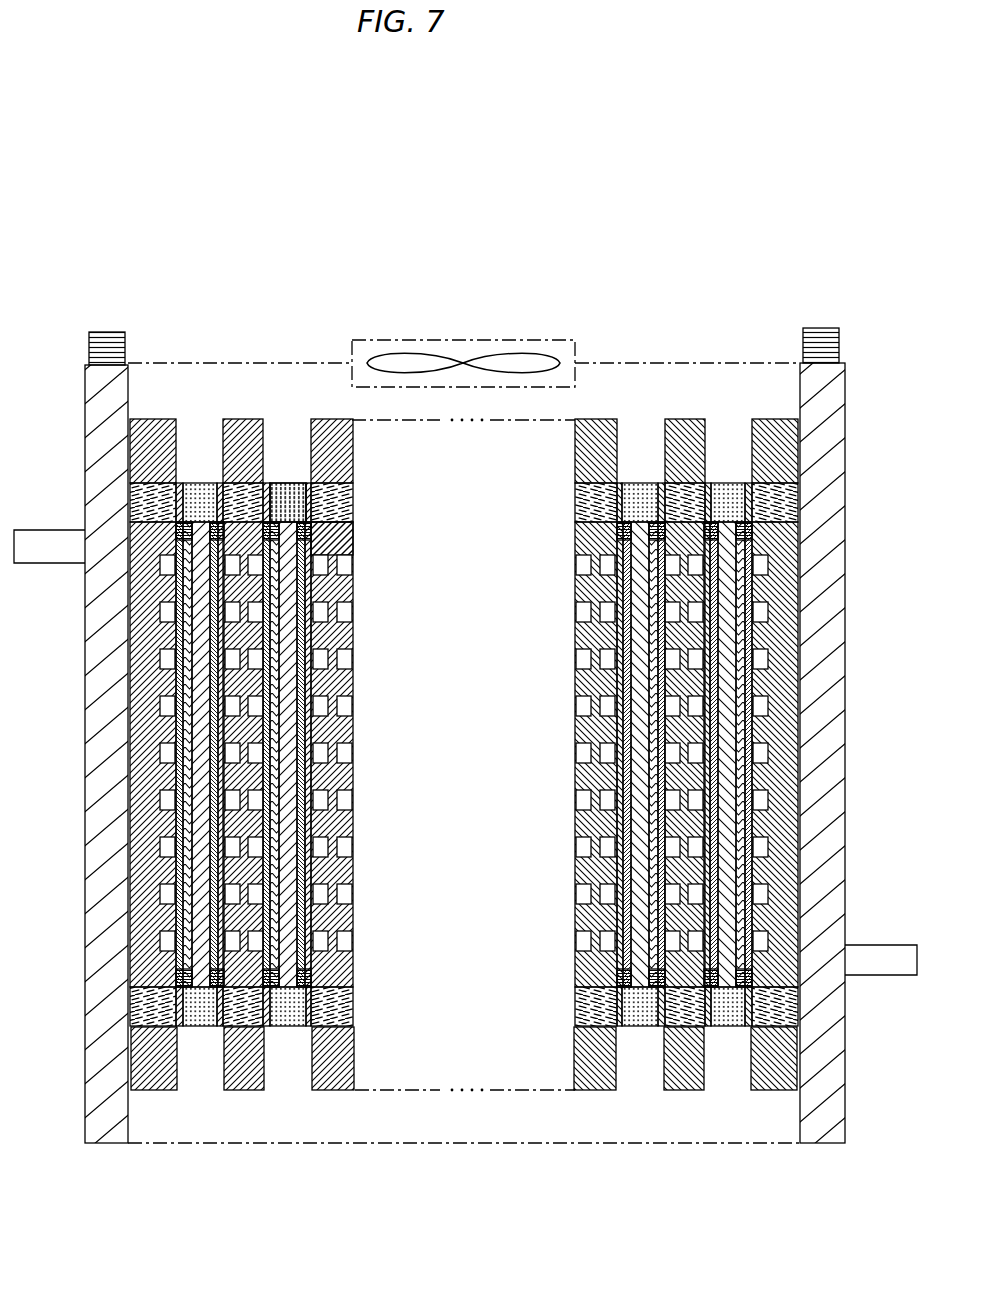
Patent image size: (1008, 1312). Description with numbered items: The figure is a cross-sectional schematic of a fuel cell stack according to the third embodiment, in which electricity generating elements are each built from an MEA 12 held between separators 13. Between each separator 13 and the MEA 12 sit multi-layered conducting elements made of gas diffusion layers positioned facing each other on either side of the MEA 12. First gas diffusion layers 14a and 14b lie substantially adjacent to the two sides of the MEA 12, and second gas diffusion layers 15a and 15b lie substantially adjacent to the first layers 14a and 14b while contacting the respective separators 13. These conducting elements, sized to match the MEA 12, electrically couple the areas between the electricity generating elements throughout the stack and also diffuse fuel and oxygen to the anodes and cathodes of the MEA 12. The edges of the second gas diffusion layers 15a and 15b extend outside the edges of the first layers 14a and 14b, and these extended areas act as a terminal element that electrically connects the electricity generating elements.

The second gas diffusion layer 15b is at (313, 614).
The second gas diffusion layer 15a is at (267, 643).
The first gas diffusion layer 14b is at (303, 683).
The first gas diffusion layer 14a is at (275, 720).
The separator 13 is at (328, 1098).
The MEA 12 is at (287, 1027).